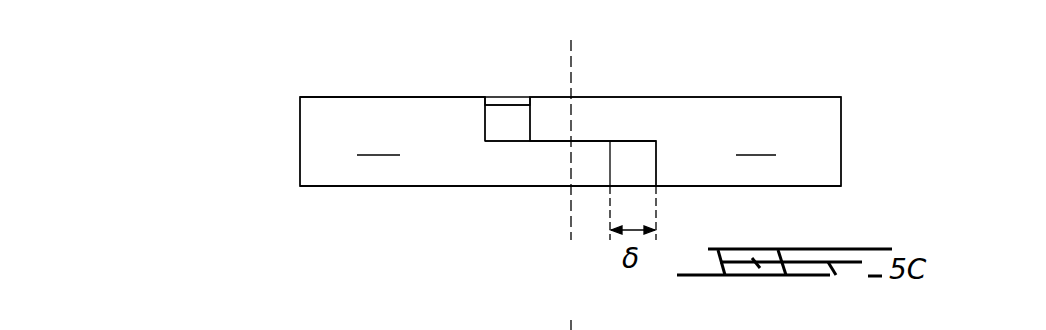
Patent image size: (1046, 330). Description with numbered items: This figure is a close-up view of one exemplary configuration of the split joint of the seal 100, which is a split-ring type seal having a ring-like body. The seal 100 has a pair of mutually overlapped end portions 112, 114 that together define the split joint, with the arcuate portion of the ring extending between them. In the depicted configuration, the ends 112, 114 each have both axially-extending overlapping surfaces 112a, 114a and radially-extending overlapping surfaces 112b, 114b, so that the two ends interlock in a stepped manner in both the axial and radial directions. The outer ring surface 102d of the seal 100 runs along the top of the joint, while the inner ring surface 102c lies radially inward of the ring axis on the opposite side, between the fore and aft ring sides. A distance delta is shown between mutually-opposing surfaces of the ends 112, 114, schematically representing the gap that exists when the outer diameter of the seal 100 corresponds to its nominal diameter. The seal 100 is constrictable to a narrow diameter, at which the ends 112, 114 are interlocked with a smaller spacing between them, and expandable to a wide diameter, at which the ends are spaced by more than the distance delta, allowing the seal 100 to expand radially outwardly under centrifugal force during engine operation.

The seal 100 is at (203, 147).
The end portion 112 is at (478, 141).
The end portion 114 is at (685, 141).
The axially-extending overlapping surface 112a is at (597, 141).
The radially-extending overlapping surface 112b is at (502, 121).
The axially-extending overlapping surface 114a is at (541, 142).
The radially-extending overlapping surface 114b is at (520, 91).
The inner ring surface 102c is at (340, 186).
The outer ring surface 102d is at (340, 97).